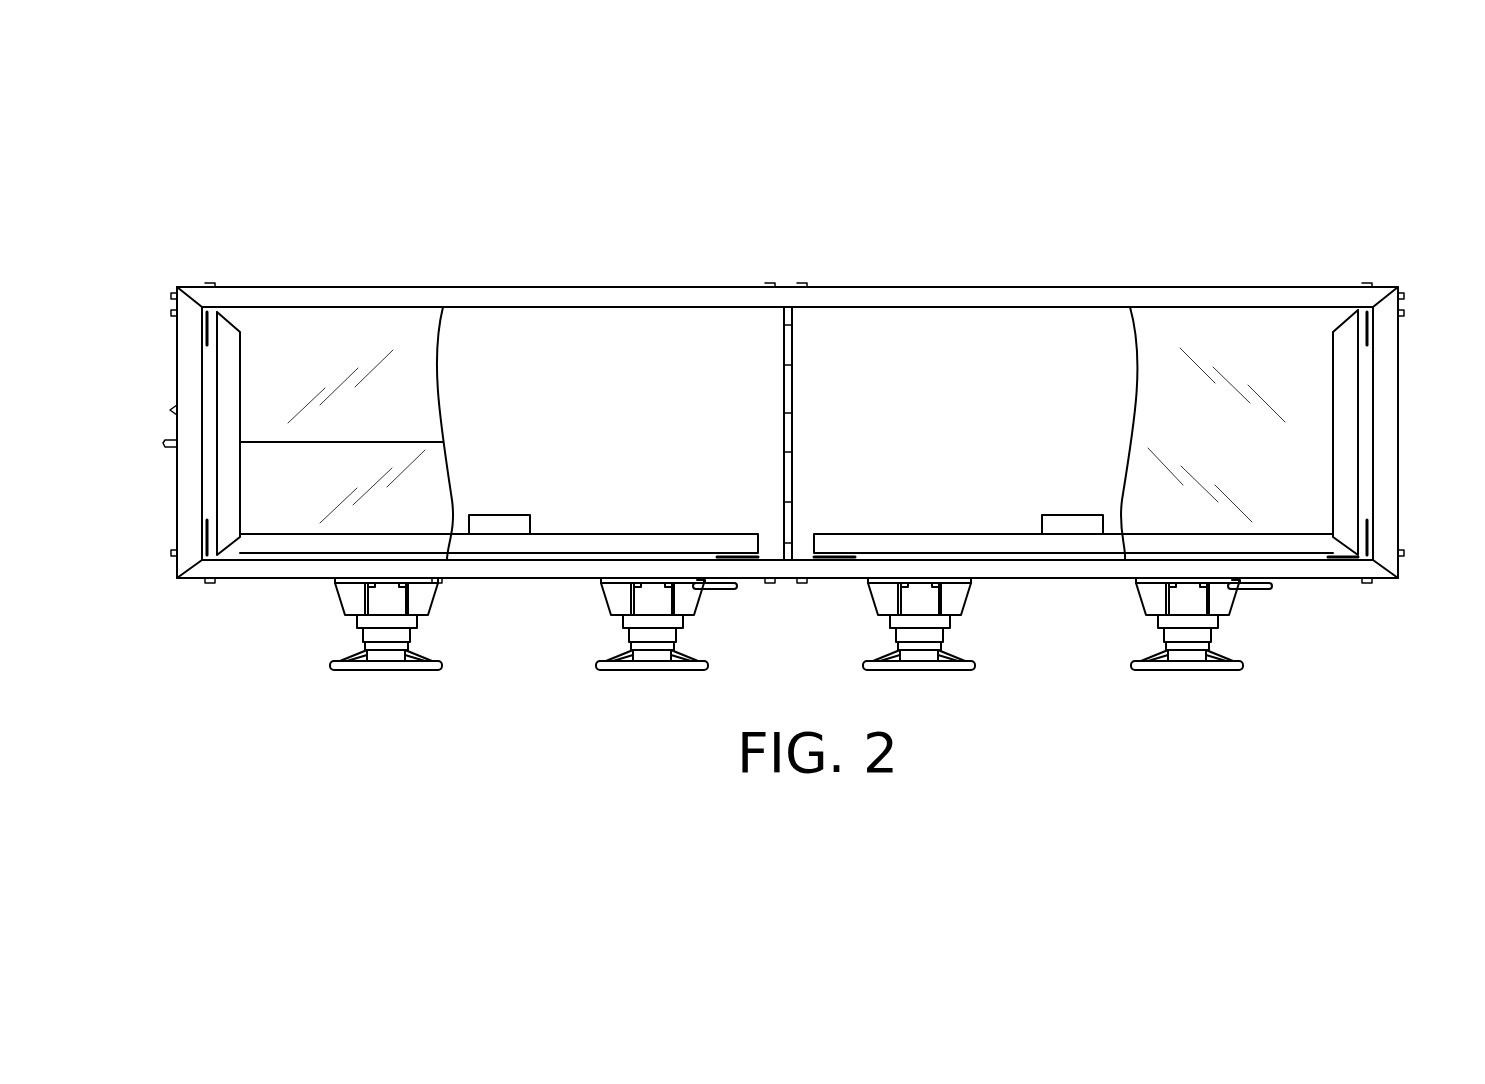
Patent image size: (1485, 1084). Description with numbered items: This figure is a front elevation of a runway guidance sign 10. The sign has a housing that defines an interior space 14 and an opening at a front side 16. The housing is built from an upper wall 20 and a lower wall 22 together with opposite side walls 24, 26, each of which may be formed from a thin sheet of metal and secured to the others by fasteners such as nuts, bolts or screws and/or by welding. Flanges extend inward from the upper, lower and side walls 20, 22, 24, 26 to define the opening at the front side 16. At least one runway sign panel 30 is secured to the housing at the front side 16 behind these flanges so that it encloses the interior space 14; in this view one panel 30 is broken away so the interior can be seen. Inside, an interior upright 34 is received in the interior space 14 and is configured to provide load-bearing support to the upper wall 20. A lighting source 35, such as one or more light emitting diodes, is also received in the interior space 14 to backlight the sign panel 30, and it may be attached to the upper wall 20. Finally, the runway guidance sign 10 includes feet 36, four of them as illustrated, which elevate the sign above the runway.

The runway guidance sign 10 is at (1110, 145).
The interior space 14 is at (727, 418).
The front side 16 is at (560, 308).
The upper wall 20 is at (320, 287).
The lower wall 22 is at (1005, 582).
The side wall 24 is at (177, 380).
The side wall 26 is at (1398, 356).
The runway sign panel 30 is at (284, 515).
The interior upright 34 is at (807, 403).
The lighting source 35 is at (498, 524).
The feet 36 is at (383, 668).